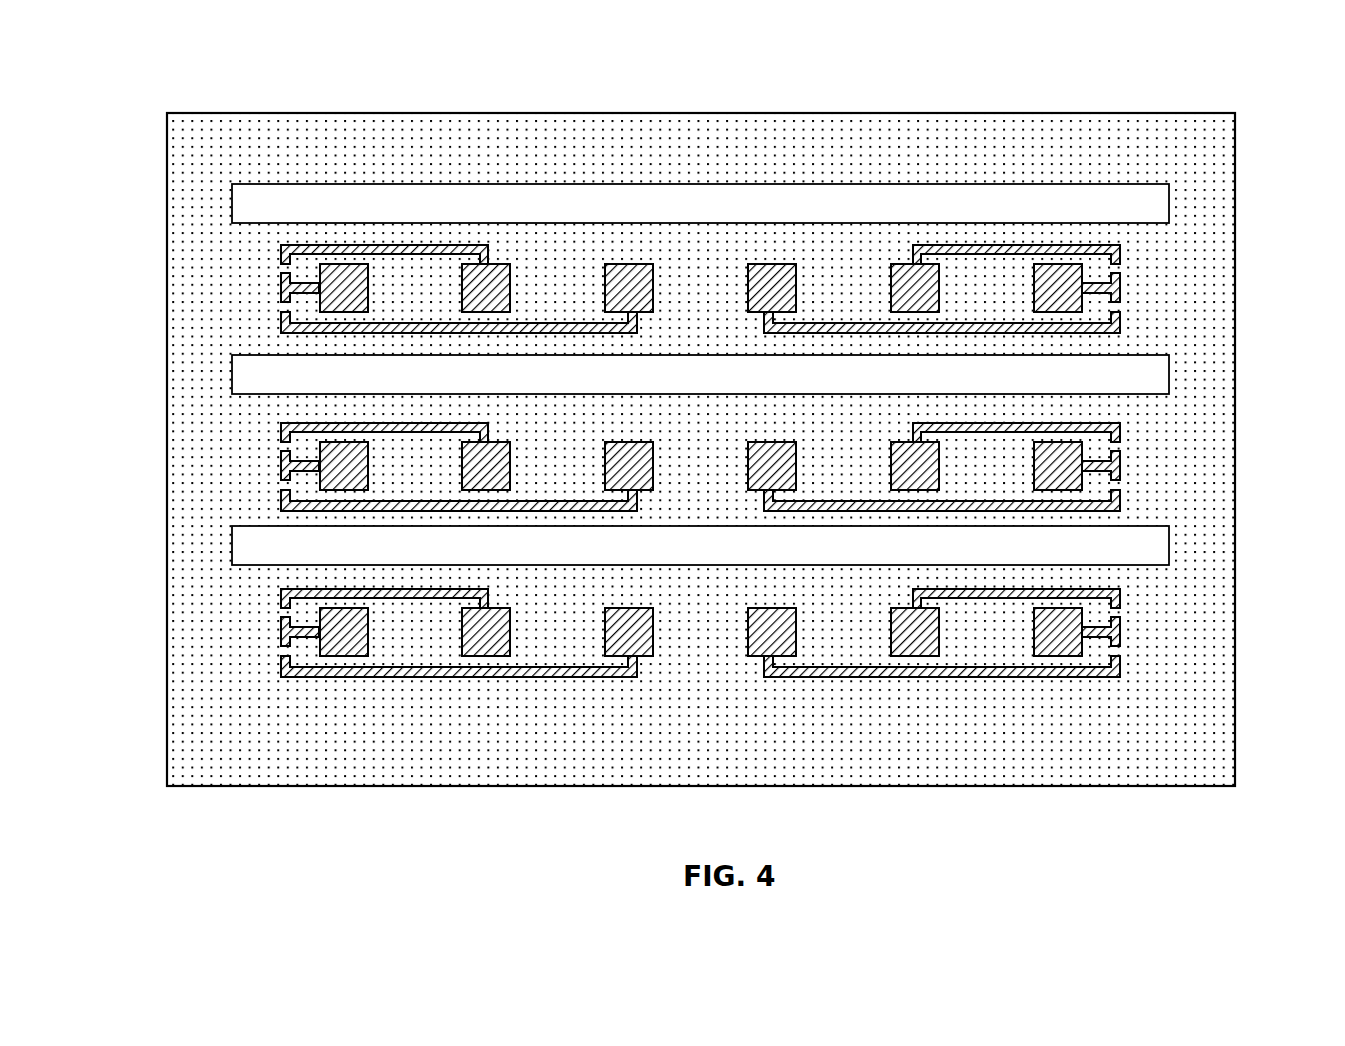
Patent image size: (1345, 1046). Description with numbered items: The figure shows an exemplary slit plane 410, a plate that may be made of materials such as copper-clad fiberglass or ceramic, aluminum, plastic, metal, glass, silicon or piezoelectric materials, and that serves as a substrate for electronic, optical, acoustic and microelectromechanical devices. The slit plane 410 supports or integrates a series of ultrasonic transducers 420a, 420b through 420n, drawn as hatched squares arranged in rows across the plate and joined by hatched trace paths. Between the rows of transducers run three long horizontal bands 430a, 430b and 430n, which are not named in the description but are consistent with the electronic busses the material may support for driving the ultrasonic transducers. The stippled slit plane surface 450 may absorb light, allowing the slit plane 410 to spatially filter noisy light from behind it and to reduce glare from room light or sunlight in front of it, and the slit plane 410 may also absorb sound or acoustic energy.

The slit plane 410 is at (278, 105).
The slit plane surface 450 is at (189, 262).
The ultrasonic transducer 420a is at (340, 292).
The ultrasonic transducer 420b is at (465, 297).
The ultrasonic transducer 420n is at (1078, 630).
The first conductive line 430a is at (700, 203).
The second conductive line 430b is at (700, 374).
The nth conductive line 430n is at (700, 545).